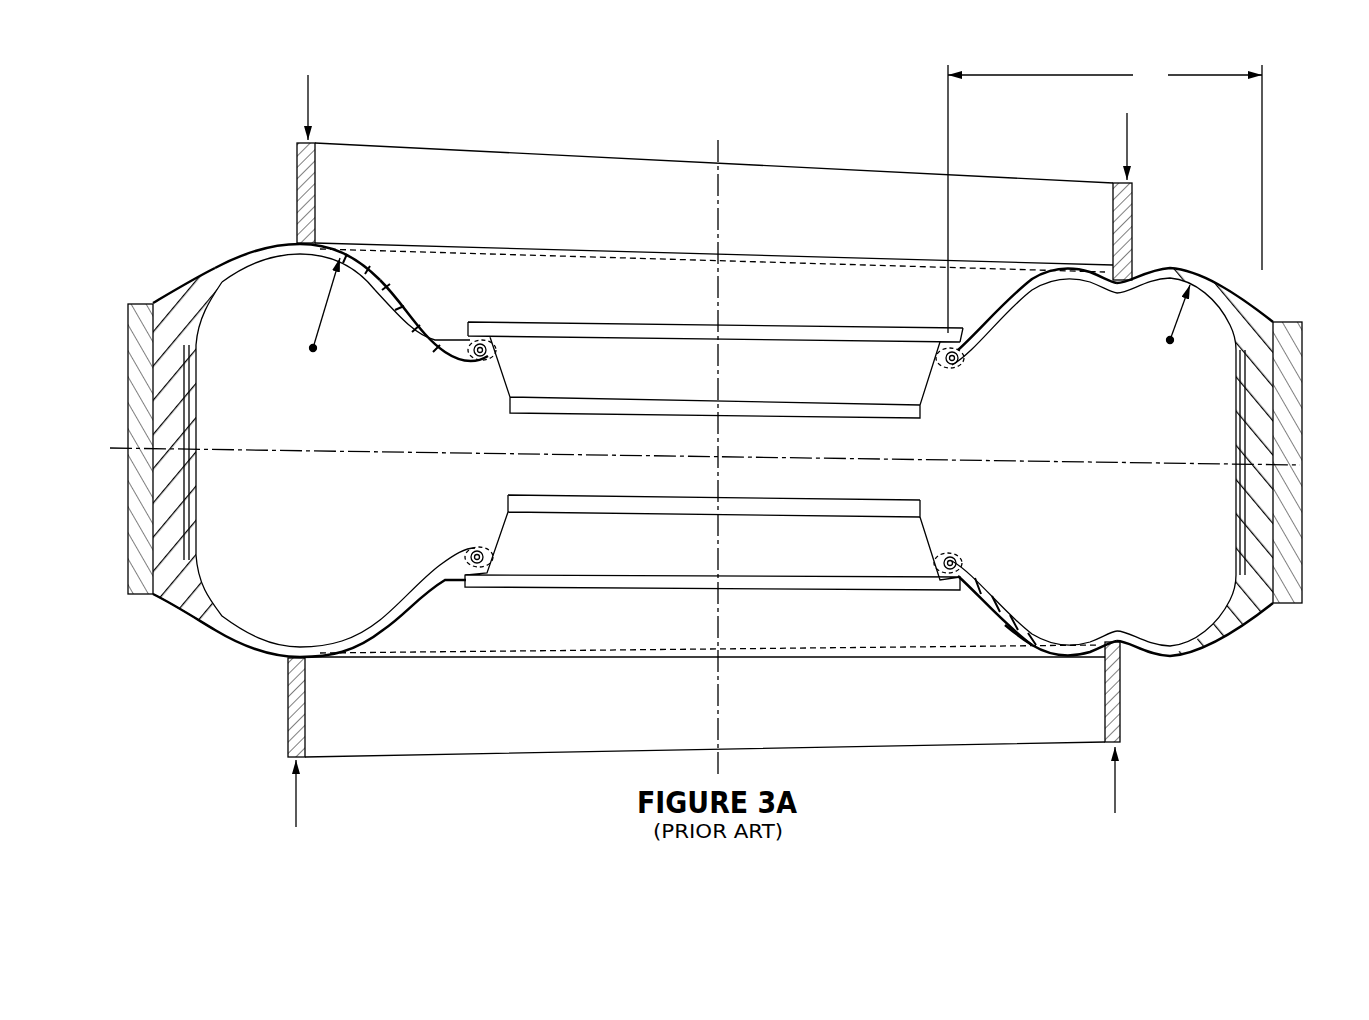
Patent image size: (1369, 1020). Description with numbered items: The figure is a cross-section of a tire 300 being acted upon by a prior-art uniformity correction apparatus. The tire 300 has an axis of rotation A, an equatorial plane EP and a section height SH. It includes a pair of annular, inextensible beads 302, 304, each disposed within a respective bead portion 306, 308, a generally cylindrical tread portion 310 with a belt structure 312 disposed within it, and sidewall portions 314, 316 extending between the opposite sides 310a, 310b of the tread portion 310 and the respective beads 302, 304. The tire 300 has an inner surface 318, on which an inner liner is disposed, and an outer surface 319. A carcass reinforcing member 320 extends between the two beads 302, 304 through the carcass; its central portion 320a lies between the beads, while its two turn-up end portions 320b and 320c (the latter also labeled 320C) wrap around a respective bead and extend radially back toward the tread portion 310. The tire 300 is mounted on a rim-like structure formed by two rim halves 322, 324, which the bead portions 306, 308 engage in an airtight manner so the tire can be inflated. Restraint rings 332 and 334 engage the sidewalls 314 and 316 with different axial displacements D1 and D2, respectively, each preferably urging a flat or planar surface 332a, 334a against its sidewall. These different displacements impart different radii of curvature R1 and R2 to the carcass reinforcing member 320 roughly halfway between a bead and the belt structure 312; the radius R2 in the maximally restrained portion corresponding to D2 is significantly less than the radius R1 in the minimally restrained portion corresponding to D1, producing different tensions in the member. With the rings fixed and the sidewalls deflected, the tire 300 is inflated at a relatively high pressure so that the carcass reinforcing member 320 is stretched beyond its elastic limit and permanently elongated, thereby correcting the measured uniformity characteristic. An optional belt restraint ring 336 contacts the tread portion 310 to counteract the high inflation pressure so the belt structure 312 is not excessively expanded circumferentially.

The tire 300 is at (733, 452).
The bead 302 is at (473, 362).
The bead 304 is at (470, 543).
The bead portion 306 is at (498, 350).
The bead portion 308 is at (495, 552).
The tread portion 310 is at (165, 583).
The side of tread portion 310a is at (1253, 320).
The side of tread portion 310b is at (1230, 628).
The belt structure 312 is at (185, 572).
The sidewall portion 314 is at (287, 243).
The sidewall portion 316 is at (257, 656).
The inner surface 318 is at (220, 268).
The outer surface 319 is at (230, 258).
The carcass reinforcing member 320 is at (227, 613).
The central portion 320a is at (1236, 445).
The end portion 320b is at (970, 333).
The end portion 320c is at (968, 588).
The end portion 320C is at (1013, 587).
The rim half 322 is at (698, 384).
The rim half 324 is at (705, 544).
The restraint ring 332 is at (642, 224).
The flat surface 332a is at (311, 238).
The restraint ring 334 is at (645, 714).
The flat surface 334a is at (300, 667).
The belt restraint ring 336 is at (125, 575).
The axis of rotation A is at (718, 153).
The equatorial plane EP is at (320, 451).
The axial displacement D1 is at (308, 97).
The axial displacement D2 is at (1127, 140).
The section height SH is at (1105, 199).
The radius of curvature R1 is at (336, 305).
The radius of curvature R2 is at (1190, 314).